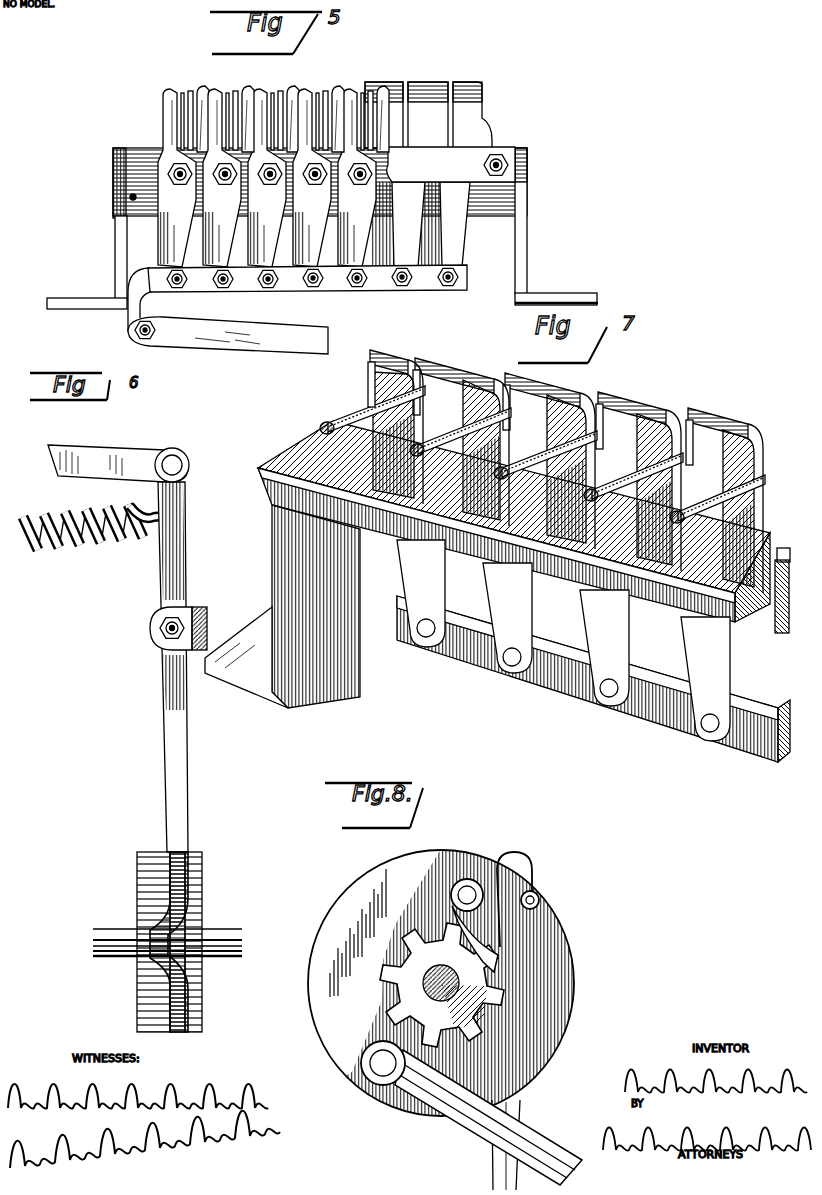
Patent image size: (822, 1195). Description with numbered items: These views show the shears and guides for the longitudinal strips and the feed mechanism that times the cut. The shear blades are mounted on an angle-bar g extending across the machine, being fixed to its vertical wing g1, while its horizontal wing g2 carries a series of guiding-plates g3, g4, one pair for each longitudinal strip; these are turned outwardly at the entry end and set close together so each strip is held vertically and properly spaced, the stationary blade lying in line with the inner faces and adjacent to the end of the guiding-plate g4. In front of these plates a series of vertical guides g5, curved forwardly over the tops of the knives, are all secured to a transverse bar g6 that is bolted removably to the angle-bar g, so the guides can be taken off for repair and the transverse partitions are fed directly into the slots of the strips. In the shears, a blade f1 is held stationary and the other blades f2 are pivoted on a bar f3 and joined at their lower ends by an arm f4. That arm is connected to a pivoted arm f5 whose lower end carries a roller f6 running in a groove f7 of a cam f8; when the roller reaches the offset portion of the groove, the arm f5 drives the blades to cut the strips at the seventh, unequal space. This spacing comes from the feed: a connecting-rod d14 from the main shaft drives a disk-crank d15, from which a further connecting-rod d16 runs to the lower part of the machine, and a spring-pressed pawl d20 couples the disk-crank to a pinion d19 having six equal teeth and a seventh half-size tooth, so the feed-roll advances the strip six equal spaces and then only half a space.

In FIG. 5, the angle-bar g is at (136, 158).
In FIG. 5, the stationary blade f1 is at (268, 98).
In FIG. 5, the pivoted blades f2 is at (212, 99).
In FIG. 5, the bar f3 is at (463, 275).
In FIG. 5, the arm f4 is at (238, 346).
In FIG. 5, the transverse bar g6 is at (482, 159).
In FIG. 7, the transverse bar g6 is at (790, 600).
In FIG. 6, the pivoted arm f5 is at (165, 590).
In FIG. 6, the roller f6 is at (204, 921).
In FIG. 6, the groove f7 is at (193, 865).
In FIG. 6, the cam f8 is at (166, 863).
In FIG. 7, the vertical wing g1 is at (757, 640).
In FIG. 7, the horizontal wing g2 is at (687, 577).
In FIG. 7, the guiding-plate g3 is at (357, 412).
In FIG. 7, the guiding-plate g4 is at (440, 397).
In FIG. 7, the vertical guides g5 is at (730, 392).
In FIG. 8, the connecting-rod d14 is at (527, 1106).
In FIG. 8, the disk-crank d15 is at (437, 863).
In FIG. 8, the connecting-rod d16 is at (474, 1128).
In FIG. 8, the pinion d19 is at (402, 983).
In FIG. 8, the pawl d20 is at (488, 923).